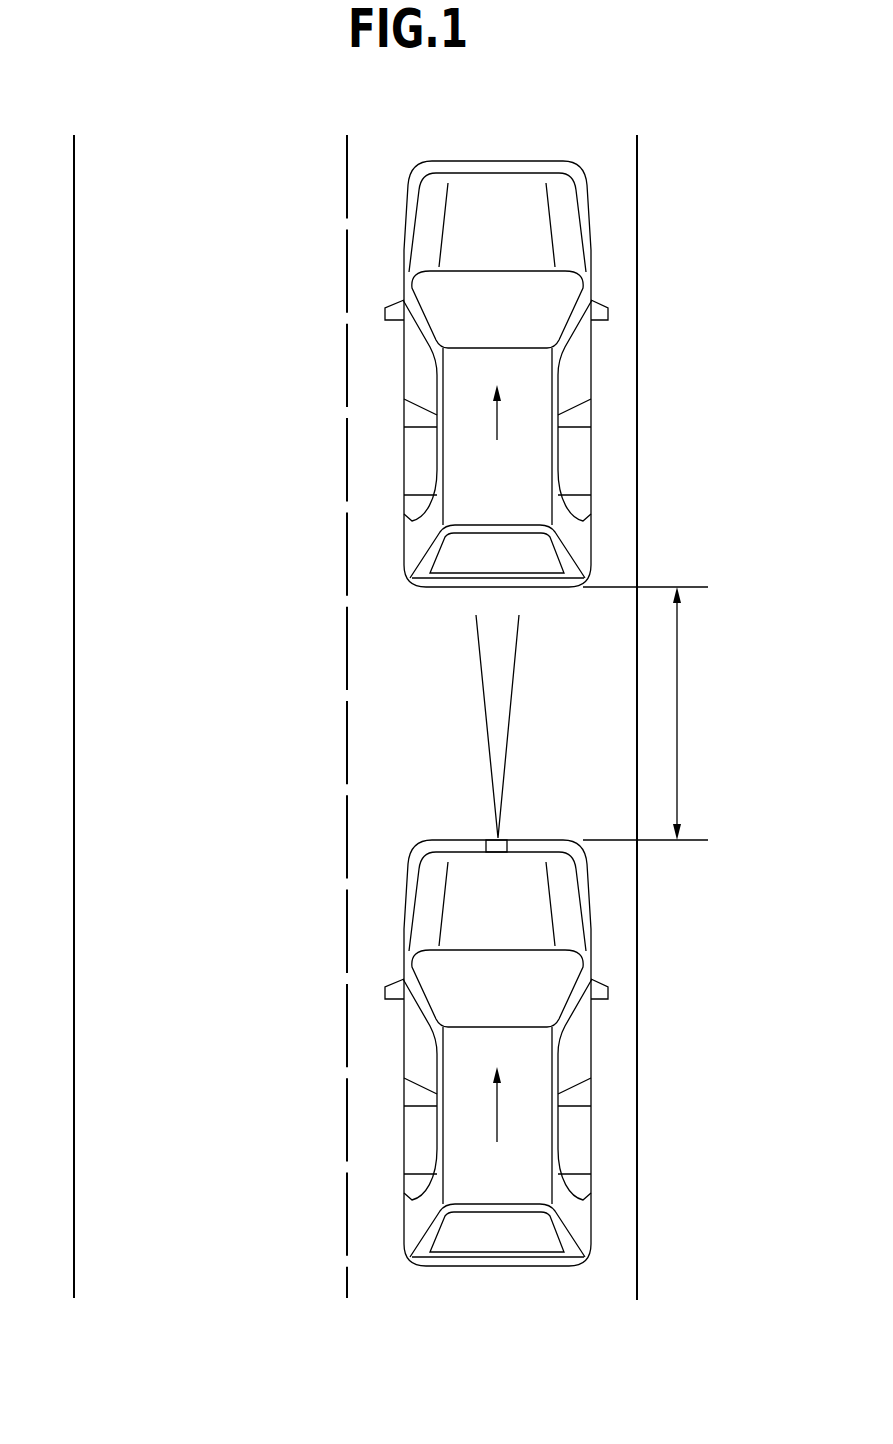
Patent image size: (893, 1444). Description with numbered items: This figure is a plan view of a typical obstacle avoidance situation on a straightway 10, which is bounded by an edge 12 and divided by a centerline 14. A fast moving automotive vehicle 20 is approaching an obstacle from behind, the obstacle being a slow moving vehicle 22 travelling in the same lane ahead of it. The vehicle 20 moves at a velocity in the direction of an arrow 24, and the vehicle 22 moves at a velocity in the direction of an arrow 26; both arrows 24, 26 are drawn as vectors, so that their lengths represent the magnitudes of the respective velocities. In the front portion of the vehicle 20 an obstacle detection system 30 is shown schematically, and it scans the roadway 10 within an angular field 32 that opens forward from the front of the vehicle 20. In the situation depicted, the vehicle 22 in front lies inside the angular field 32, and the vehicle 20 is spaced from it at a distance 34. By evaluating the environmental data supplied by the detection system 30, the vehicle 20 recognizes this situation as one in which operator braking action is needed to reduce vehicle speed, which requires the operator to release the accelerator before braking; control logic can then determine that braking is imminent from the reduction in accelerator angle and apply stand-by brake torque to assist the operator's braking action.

The straightway 10 is at (176, 205).
The edge 12 is at (637, 181).
The centerline 14 is at (347, 273).
The automotive vehicle 20 is at (578, 1223).
The slow moving vehicle 22 is at (528, 252).
The arrow 24 is at (497, 1112).
The arrow 26 is at (497, 418).
The obstacle detection system 30 is at (495, 847).
The angular field 32 is at (481, 687).
The distance 34 is at (680, 722).